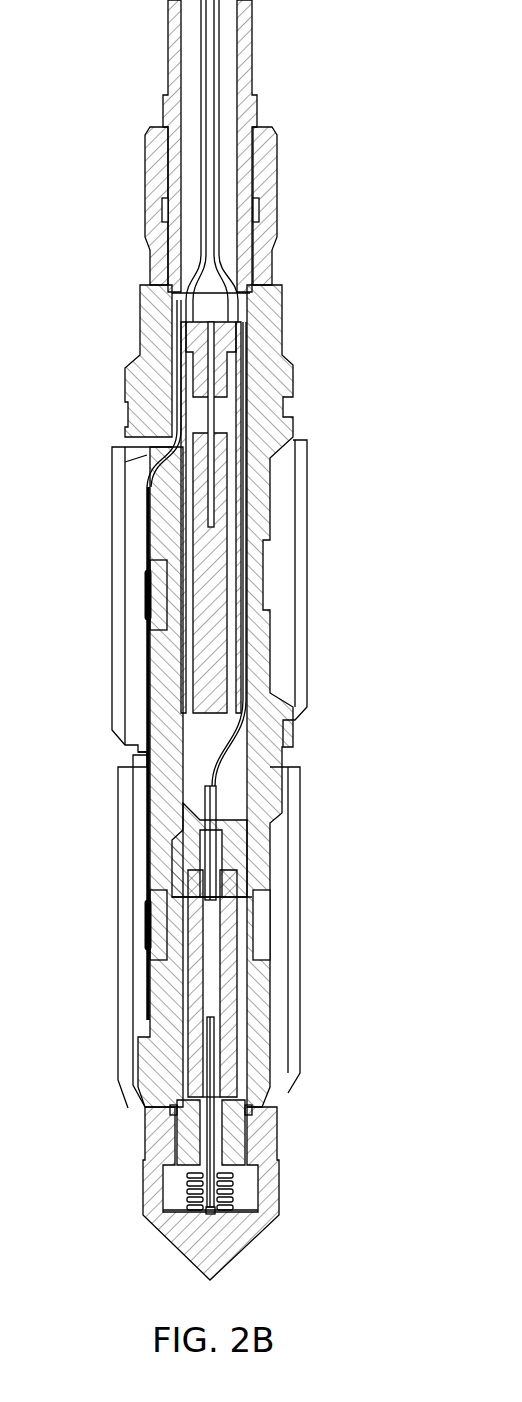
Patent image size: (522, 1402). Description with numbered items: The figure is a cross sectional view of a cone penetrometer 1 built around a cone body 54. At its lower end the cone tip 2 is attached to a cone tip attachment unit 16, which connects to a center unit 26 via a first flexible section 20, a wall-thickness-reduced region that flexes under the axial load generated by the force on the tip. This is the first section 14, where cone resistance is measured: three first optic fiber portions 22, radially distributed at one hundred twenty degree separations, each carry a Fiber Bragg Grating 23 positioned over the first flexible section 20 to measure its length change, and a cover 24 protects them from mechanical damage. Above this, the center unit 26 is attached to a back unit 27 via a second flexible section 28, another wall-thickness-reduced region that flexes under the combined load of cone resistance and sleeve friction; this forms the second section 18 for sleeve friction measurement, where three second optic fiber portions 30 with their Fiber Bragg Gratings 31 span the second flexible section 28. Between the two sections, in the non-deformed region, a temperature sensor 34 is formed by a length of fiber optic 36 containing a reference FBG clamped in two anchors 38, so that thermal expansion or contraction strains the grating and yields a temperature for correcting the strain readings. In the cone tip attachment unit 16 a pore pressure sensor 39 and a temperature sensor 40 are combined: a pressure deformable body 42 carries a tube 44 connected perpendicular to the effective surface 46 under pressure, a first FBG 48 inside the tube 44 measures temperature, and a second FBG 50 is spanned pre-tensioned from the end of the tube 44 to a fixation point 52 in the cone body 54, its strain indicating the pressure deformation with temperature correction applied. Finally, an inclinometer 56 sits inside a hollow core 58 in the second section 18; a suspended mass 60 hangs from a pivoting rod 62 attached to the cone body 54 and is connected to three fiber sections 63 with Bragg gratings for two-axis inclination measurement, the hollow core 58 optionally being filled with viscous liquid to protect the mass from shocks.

The cone penetrometer 1 is at (100, 1168).
The cone tip 2 is at (255, 1240).
The first section 14 is at (100, 948).
The cone tip attachment unit 16 is at (278, 1157).
The second section 18 is at (100, 620).
The first flexible section 20 is at (255, 917).
The first optic fiber portions 22 is at (152, 900).
The Fiber Bragg Grating 23 is at (150, 927).
The cover 24 is at (300, 998).
The center unit 26 is at (279, 790).
The back unit 27 is at (297, 440).
The second flexible section 28 is at (262, 620).
The second optic fiber portions 30 is at (152, 572).
The Fiber Bragg Grating 31 is at (150, 600).
The temperature sensor 34 is at (147, 755).
The fiber optic 36 is at (142, 759).
The anchors 38 is at (145, 722).
The pore pressure sensor 39 is at (235, 1080).
The temperature sensor 40 is at (215, 1130).
The pressure deformable body 42 is at (195, 1212).
The tube 44 is at (215, 1052).
The effective surface 46 is at (215, 1215).
The first FBG 48 is at (170, 1111).
The second FBG 50 is at (212, 953).
The fixation point 52 is at (213, 897).
The cone body 54 is at (272, 346).
The inclinometer 56 is at (228, 582).
The hollow core 58 is at (187, 537).
The suspended mass 60 is at (221, 661).
The pivoting rod 62 is at (200, 407).
The fiber sections 63 is at (225, 414).